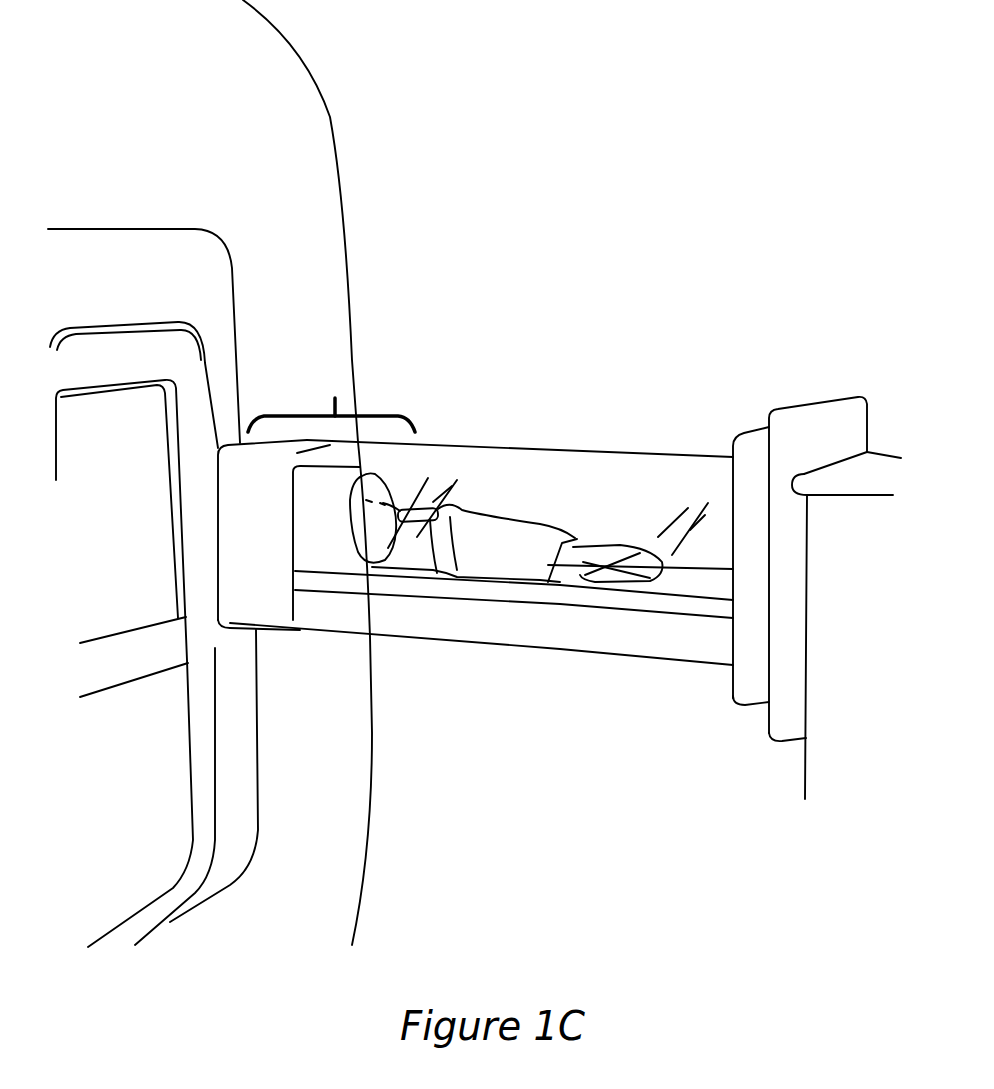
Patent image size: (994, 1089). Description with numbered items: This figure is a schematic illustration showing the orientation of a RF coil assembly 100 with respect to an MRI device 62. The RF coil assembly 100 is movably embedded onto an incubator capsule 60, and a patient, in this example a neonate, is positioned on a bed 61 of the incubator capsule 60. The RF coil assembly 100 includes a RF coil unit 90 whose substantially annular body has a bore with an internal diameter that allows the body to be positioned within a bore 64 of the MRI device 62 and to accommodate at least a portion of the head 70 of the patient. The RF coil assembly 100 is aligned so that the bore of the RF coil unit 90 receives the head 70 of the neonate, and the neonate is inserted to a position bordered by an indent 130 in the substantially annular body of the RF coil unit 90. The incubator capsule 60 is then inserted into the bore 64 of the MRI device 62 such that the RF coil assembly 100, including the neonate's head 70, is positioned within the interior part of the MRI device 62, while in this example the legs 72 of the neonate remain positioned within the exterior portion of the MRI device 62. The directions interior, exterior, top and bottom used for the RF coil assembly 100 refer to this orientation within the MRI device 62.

The incubator capsule 60 is at (673, 637).
The bed 61 is at (480, 590).
The MRI device 62 is at (313, 168).
The bore 64 is at (108, 597).
The head 70 is at (410, 486).
The legs 72 is at (578, 562).
The RF coil unit 90 is at (330, 537).
The RF coil assembly 100 is at (335, 398).
The indent 130 is at (366, 476).